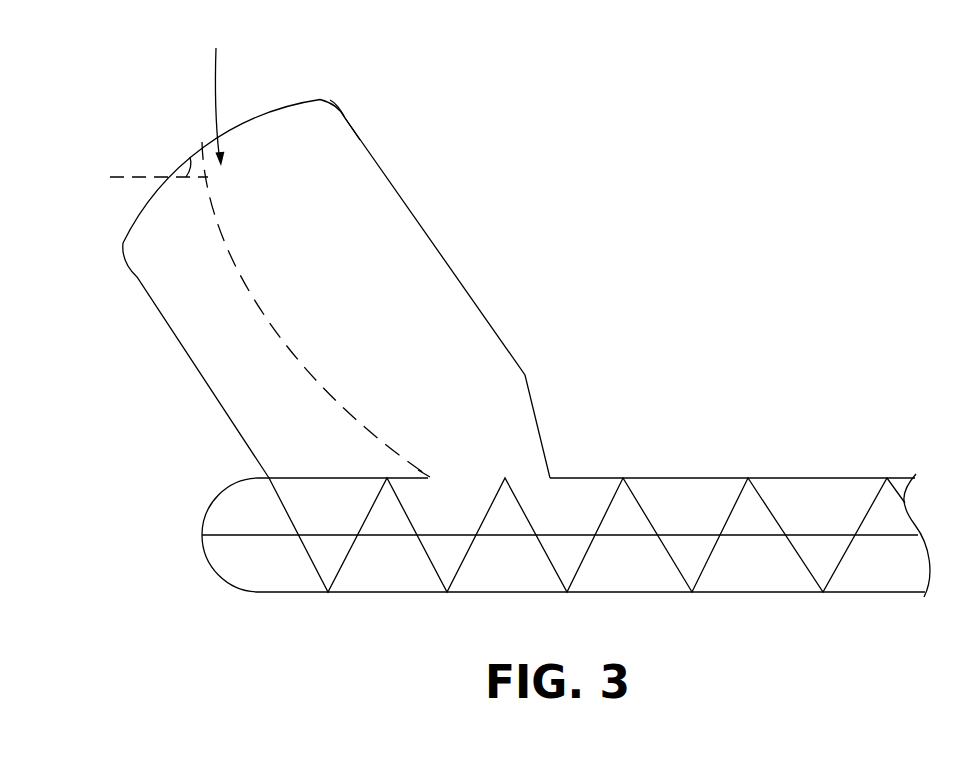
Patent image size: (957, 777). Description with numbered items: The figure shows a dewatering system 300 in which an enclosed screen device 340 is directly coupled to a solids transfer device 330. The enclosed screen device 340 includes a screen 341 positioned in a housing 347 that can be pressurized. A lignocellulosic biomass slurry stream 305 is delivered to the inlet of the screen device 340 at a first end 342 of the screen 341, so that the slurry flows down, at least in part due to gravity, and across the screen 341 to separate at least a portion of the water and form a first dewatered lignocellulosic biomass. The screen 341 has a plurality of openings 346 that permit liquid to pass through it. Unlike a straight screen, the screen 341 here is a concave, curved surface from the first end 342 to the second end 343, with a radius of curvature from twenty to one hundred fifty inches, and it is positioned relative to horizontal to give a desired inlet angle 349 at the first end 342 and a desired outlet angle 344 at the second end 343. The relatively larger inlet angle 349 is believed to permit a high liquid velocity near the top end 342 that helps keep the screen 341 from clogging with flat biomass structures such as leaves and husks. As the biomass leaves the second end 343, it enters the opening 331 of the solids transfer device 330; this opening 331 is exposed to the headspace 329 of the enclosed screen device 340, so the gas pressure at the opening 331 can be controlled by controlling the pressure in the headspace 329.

The dewatering system 300 is at (773, 187).
The lignocellulosic biomass slurry stream 305 is at (218, 72).
The headspace 329 is at (455, 325).
The solids transfer device 330 is at (751, 456).
The opening 331 is at (479, 468).
The enclosed screen device 340 is at (137, 282).
The screen 341 is at (290, 347).
The first end 342 is at (195, 134).
The second end 343 is at (437, 472).
The outlet angle 344 is at (395, 478).
The openings 346 is at (272, 305).
The housing 347 is at (344, 113).
The inlet angle 349 is at (189, 156).